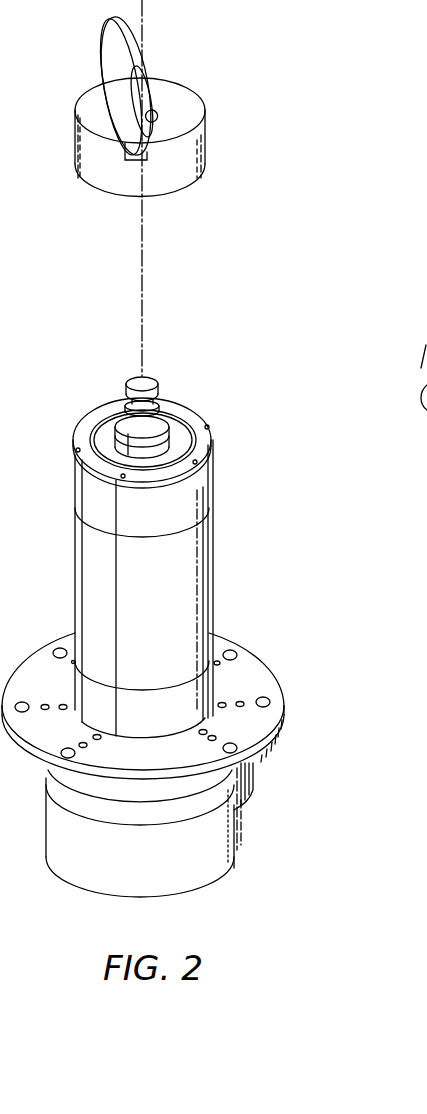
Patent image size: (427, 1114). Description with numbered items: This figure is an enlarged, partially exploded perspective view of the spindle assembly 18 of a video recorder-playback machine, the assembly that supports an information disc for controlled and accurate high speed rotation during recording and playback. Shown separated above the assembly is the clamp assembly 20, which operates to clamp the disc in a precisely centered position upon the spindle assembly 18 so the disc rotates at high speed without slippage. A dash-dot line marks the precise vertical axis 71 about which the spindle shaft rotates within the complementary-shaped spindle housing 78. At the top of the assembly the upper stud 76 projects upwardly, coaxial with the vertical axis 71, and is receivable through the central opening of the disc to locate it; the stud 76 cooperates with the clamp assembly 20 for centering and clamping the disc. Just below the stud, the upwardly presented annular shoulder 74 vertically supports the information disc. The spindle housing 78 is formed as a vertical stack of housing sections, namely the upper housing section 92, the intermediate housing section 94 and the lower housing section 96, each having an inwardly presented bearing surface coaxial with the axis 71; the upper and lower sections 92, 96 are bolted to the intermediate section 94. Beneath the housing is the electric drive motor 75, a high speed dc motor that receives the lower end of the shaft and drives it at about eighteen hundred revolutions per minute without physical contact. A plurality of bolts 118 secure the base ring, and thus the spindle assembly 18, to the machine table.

The spindle assembly 18 is at (232, 561).
The clamp assembly 20 is at (190, 106).
The vertical axis 71 is at (146, 297).
The annular shoulder 74 is at (204, 419).
The electric drive motor 75 is at (234, 827).
The upper stud 76 is at (155, 386).
The spindle housing 78 is at (77, 588).
The upper housing section 92 is at (214, 469).
The intermediate housing section 94 is at (203, 615).
The lower housing section 96 is at (201, 688).
The bolts 118 is at (213, 740).